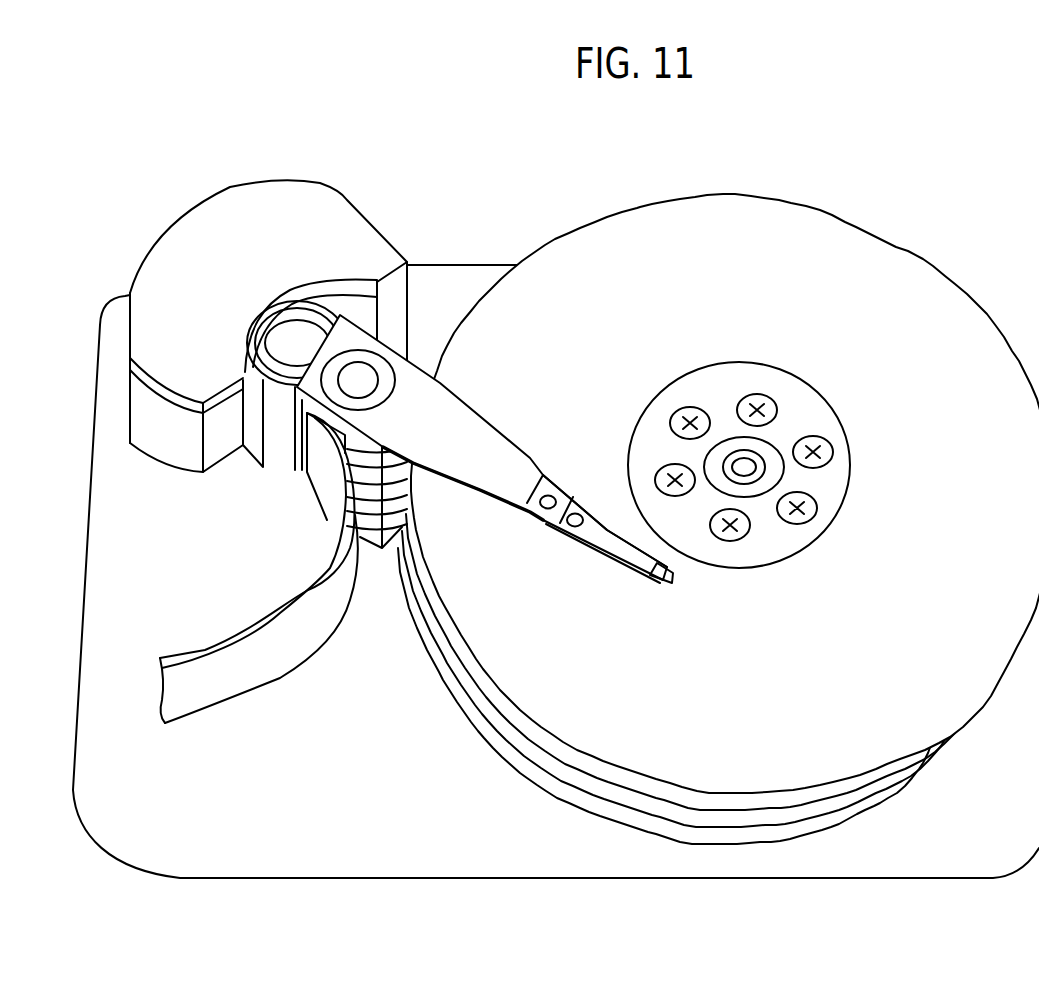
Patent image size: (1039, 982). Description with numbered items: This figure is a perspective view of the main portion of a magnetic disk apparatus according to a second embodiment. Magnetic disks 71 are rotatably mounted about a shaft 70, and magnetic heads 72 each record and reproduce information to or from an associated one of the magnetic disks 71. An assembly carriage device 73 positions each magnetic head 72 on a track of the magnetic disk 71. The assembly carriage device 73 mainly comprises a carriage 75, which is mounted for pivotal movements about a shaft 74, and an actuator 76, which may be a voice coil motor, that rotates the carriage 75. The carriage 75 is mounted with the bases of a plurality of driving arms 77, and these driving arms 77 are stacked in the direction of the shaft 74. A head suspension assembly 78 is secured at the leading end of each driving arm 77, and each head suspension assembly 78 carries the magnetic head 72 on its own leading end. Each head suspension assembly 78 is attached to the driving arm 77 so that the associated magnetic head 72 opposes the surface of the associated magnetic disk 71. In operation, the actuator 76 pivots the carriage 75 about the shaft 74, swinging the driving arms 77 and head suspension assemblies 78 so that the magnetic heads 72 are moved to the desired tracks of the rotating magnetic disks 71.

The shaft 70 is at (762, 465).
The magnetic disk 71 is at (888, 236).
The magnetic head 72 is at (666, 588).
The assembly carriage device 73 is at (397, 204).
The shaft 74 is at (372, 380).
The carriage 75 is at (303, 443).
The actuator 76 is at (195, 378).
The driving arm 77 is at (463, 430).
The head suspension assembly 78 is at (607, 542).